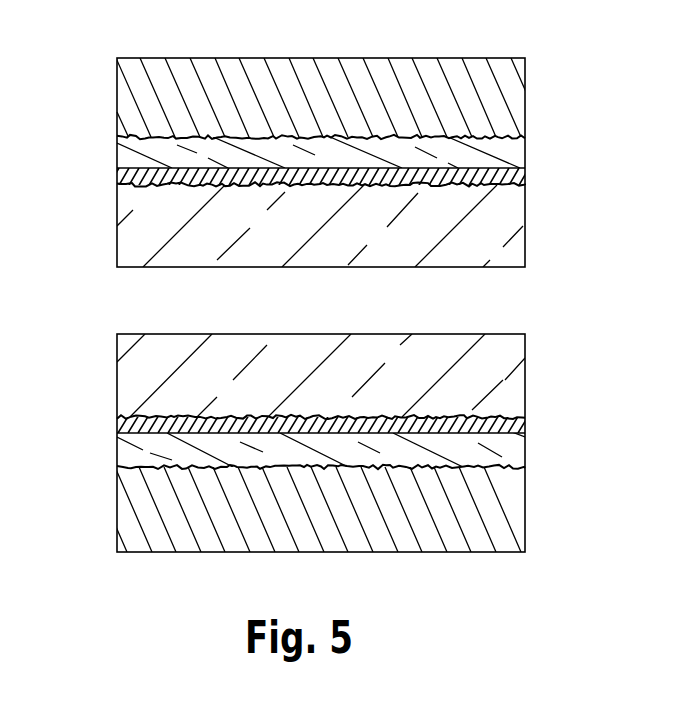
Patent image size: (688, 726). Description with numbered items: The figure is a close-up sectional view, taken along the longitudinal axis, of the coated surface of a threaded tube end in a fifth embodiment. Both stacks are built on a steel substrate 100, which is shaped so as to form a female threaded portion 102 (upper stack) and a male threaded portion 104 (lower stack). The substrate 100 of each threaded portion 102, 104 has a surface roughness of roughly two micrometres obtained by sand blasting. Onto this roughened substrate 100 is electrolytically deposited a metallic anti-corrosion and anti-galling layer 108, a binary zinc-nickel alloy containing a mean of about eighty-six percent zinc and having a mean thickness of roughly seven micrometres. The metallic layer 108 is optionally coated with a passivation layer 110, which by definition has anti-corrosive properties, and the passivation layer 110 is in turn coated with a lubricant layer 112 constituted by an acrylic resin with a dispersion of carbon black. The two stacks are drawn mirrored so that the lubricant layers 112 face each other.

The substrate 100 is at (515, 90).
The female threaded portion 102 is at (76, 127).
The male threaded portion 104 is at (65, 463).
The metallic anti-corrosion and anti-galling layer 108 is at (515, 148).
The passivation layer 110 is at (515, 177).
The lubricant layer 112 is at (505, 243).